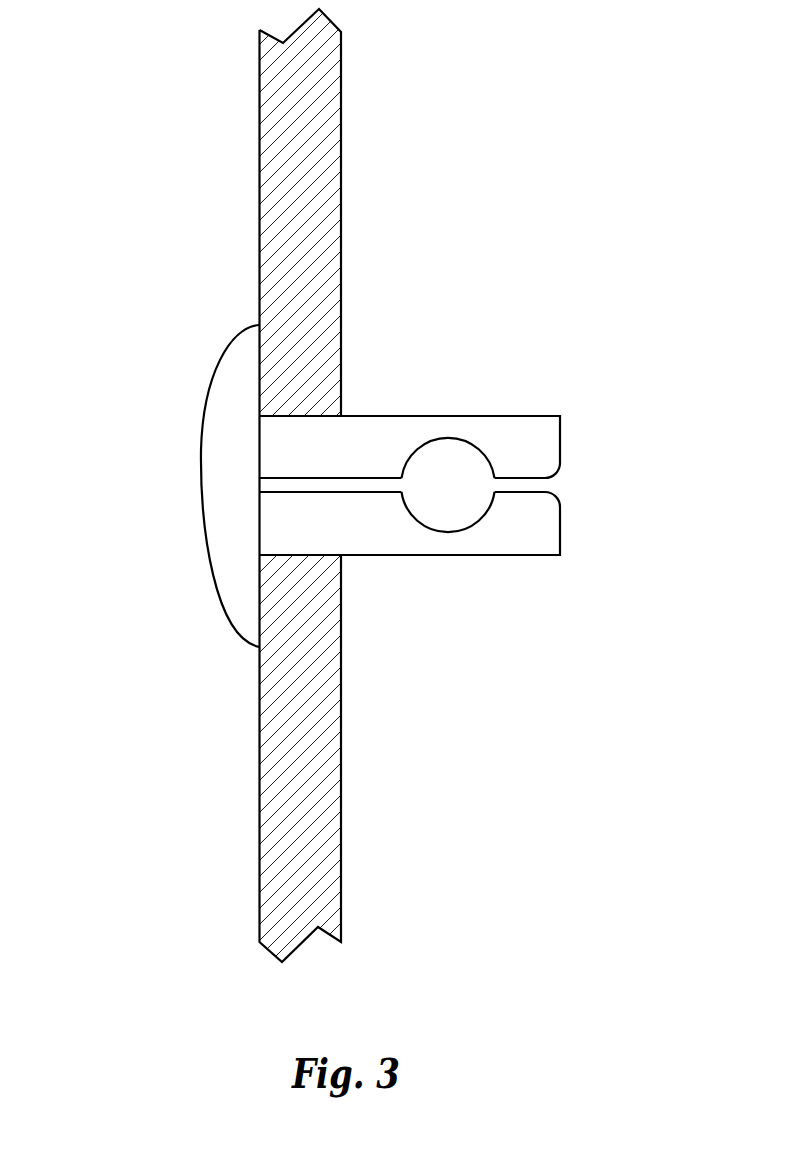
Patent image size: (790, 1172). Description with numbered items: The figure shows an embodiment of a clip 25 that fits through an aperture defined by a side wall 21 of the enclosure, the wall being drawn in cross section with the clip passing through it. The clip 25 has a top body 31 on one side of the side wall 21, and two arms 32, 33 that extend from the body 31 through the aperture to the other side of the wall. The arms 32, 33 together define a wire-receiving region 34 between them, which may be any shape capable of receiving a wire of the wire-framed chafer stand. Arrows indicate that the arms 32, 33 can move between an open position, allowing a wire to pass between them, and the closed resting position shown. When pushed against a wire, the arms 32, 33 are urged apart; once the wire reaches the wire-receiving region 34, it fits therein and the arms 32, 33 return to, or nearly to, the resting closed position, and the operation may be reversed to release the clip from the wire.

The side wall 21 is at (259, 198).
The clip 25 is at (368, 511).
The top body 31 is at (201, 449).
The arm 32 is at (532, 532).
The arm 33 is at (532, 442).
The wire-receiving region 34 is at (430, 458).